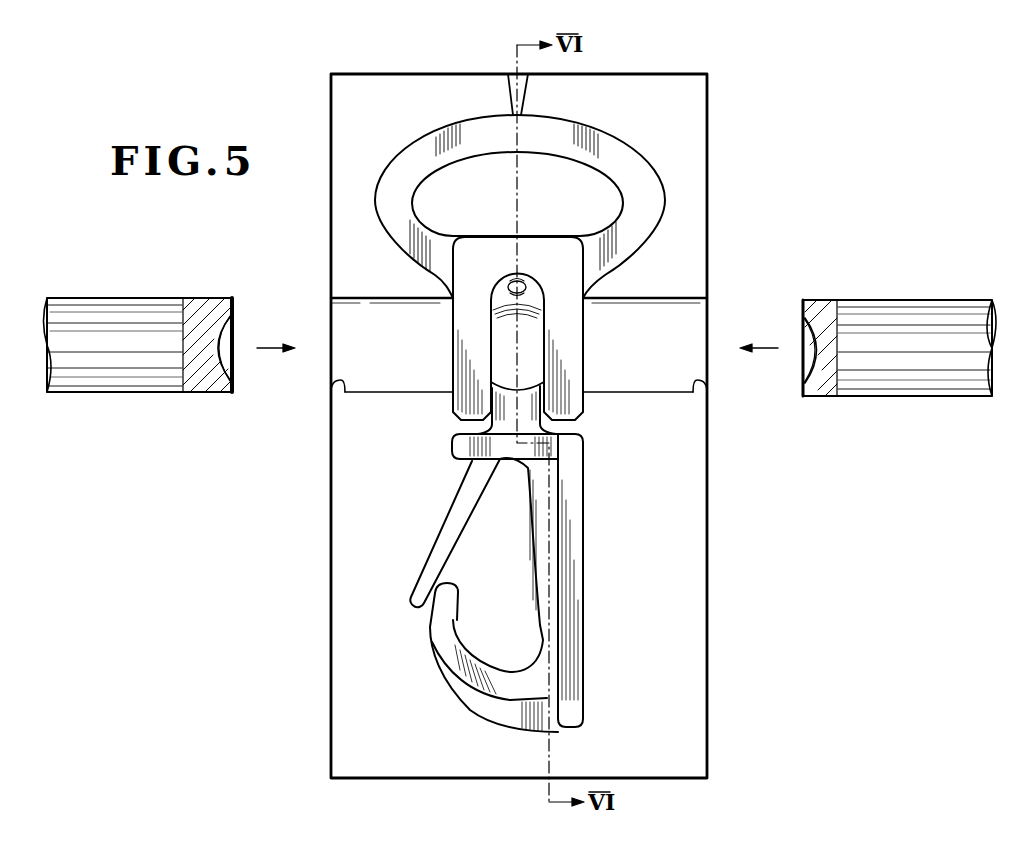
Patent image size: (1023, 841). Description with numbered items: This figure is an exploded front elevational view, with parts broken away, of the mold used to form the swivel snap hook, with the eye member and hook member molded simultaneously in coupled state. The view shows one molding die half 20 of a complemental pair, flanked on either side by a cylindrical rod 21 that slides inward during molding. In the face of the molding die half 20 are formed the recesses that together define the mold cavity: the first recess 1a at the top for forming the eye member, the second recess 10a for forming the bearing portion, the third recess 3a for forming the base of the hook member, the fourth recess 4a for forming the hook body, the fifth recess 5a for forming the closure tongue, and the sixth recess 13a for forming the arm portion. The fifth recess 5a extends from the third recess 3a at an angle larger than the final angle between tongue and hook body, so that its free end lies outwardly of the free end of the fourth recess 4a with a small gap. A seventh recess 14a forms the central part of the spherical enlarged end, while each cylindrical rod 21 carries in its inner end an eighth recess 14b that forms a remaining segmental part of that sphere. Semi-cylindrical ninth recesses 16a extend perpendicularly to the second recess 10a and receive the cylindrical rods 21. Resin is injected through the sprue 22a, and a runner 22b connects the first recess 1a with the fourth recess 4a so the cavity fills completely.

The first recess 1a is at (623, 158).
The third recess 3a is at (455, 450).
The fourth recess 4a is at (455, 695).
The fifth recess 5a is at (450, 533).
The second recess 10a is at (570, 410).
The sixth recess 13a is at (527, 405).
The seventh recess 14a is at (502, 350).
The eighth recess 14b is at (215, 347).
The ninth recess 16a is at (328, 384).
The molding die half 20 is at (708, 187).
The cylindrical rod 21 is at (118, 380).
The sprue 22a is at (510, 85).
The runner 22b is at (523, 282).